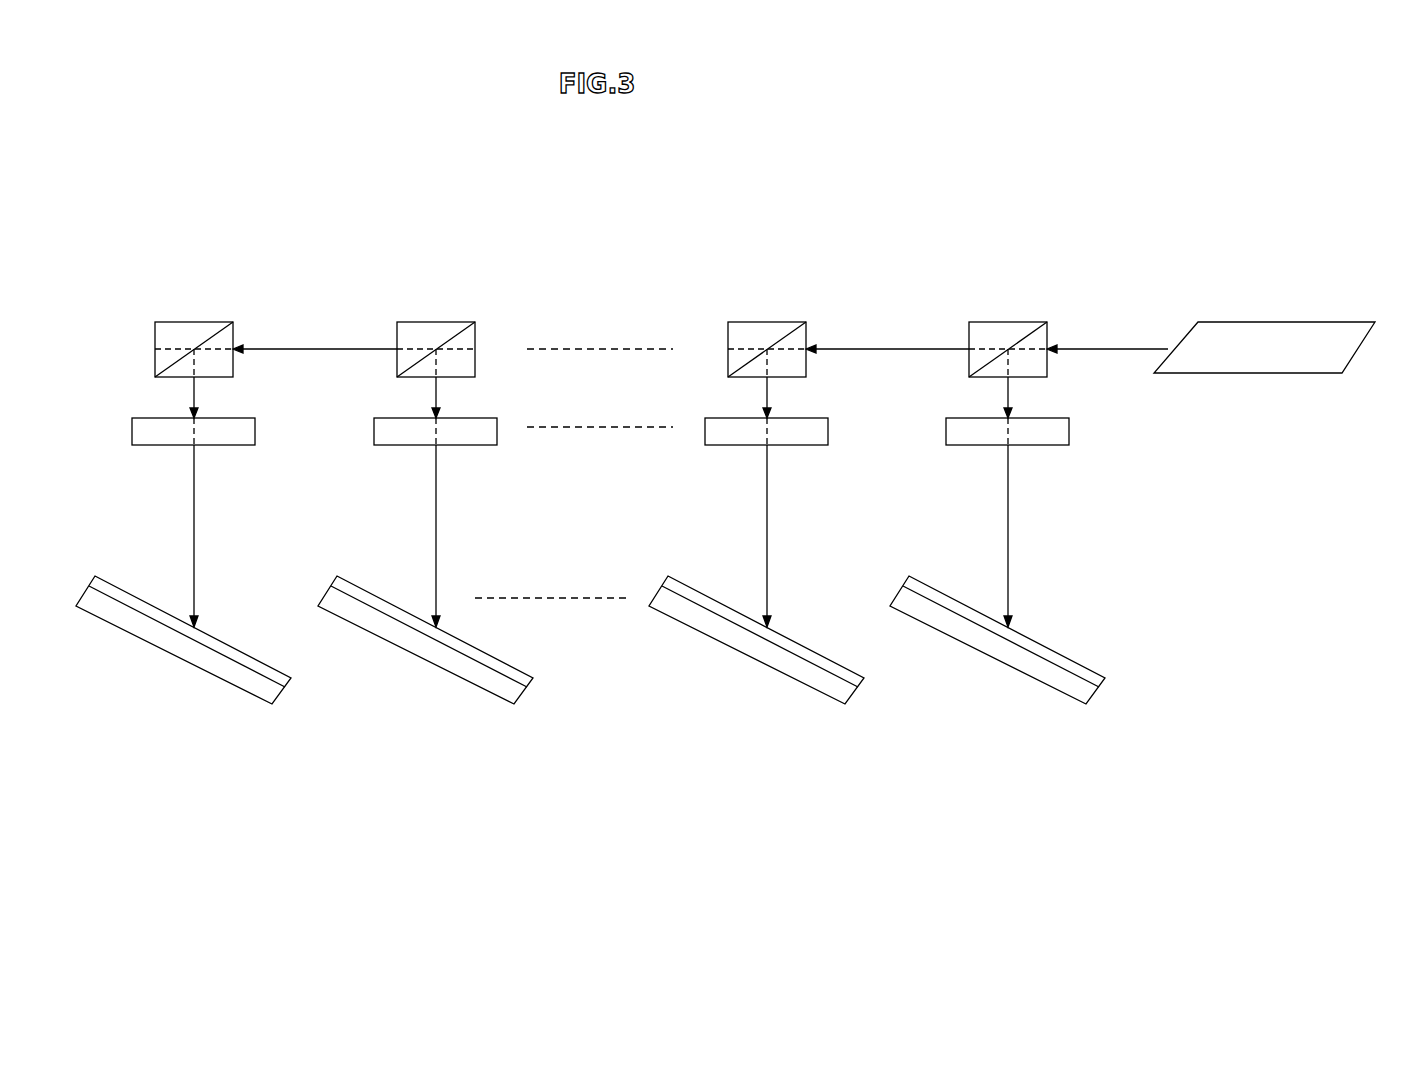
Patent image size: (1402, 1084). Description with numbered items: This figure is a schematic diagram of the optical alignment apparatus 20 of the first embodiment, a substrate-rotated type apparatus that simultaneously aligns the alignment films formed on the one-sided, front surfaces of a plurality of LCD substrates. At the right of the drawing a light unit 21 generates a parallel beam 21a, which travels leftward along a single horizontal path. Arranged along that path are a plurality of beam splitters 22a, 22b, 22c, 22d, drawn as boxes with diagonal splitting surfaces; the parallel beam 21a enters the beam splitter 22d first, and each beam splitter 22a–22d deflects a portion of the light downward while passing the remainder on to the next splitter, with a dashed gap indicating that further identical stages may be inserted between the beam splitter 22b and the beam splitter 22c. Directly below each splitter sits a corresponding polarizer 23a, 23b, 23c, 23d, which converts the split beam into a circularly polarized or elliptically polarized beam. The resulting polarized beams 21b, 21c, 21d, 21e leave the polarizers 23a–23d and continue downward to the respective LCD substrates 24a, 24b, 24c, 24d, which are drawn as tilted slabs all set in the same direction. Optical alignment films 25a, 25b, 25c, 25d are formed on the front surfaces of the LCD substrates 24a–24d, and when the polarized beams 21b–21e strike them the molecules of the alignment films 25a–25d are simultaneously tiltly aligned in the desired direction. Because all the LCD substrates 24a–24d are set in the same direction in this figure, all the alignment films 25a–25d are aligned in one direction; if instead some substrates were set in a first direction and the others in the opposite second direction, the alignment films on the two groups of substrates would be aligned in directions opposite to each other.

The optical alignment apparatus 20 is at (855, 238).
The light unit 21 is at (1268, 335).
The parallel beam 21a is at (1117, 348).
The polarized beam 21b is at (194, 537).
The split light beam 21c is at (436, 537).
The split light beam 21d is at (767, 537).
The split light beam 21e is at (1008, 537).
The beam splitter 22a is at (190, 322).
The beam splitter 22b is at (432, 322).
The beam splitter 22c is at (763, 322).
The beam splitter 22d is at (1004, 322).
The polarizer 23a is at (255, 440).
The polarizer 23b is at (497, 440).
The polarizer 23c is at (828, 440).
The polarizer 23d is at (1069, 440).
The LCD substrate 24a is at (257, 690).
The LCD substrate 24b is at (499, 690).
The LCD substrate 24c is at (830, 690).
The LCD substrate 24d is at (1071, 690).
The optical alignment film 25a is at (280, 670).
The optical alignment film 25b is at (522, 670).
The optical alignment film 25c is at (853, 670).
The optical alignment film 25d is at (1094, 670).